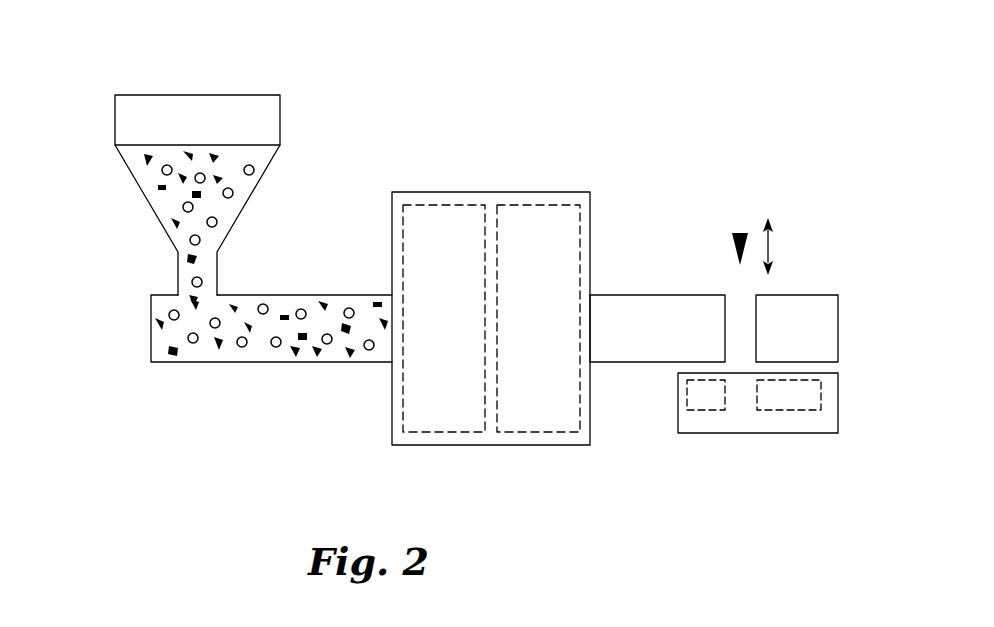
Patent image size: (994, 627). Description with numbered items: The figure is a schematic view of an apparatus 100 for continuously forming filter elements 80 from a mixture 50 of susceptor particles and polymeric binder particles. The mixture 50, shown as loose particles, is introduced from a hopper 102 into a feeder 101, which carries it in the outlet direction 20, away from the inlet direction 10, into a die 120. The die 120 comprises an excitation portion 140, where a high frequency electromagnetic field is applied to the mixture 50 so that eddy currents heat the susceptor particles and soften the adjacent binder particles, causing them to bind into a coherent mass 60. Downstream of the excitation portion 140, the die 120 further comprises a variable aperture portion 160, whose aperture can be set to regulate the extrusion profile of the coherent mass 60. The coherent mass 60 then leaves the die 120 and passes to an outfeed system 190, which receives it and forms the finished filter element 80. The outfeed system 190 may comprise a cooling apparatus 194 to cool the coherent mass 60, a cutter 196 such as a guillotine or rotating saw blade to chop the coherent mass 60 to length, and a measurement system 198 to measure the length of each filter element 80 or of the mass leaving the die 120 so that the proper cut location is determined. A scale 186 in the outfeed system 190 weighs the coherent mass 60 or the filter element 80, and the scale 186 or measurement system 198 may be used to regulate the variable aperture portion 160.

The inlet direction 10 is at (120, 330).
The outlet direction 20 is at (658, 482).
The mixture 50 is at (147, 178).
The coherent mass 60 is at (670, 295).
The filter element 80 is at (816, 295).
The apparatus 100 is at (567, 103).
The feeder 101 is at (262, 352).
The hopper 102 is at (198, 107).
The die 120 is at (537, 192).
The excitation portion 140 is at (400, 232).
The variable aperture portion 160 is at (588, 233).
The scale 186 is at (787, 410).
The outfeed system 190 is at (738, 433).
The cooling apparatus 194 is at (700, 410).
The cutter 196 is at (754, 216).
The measurement system 198 is at (790, 208).